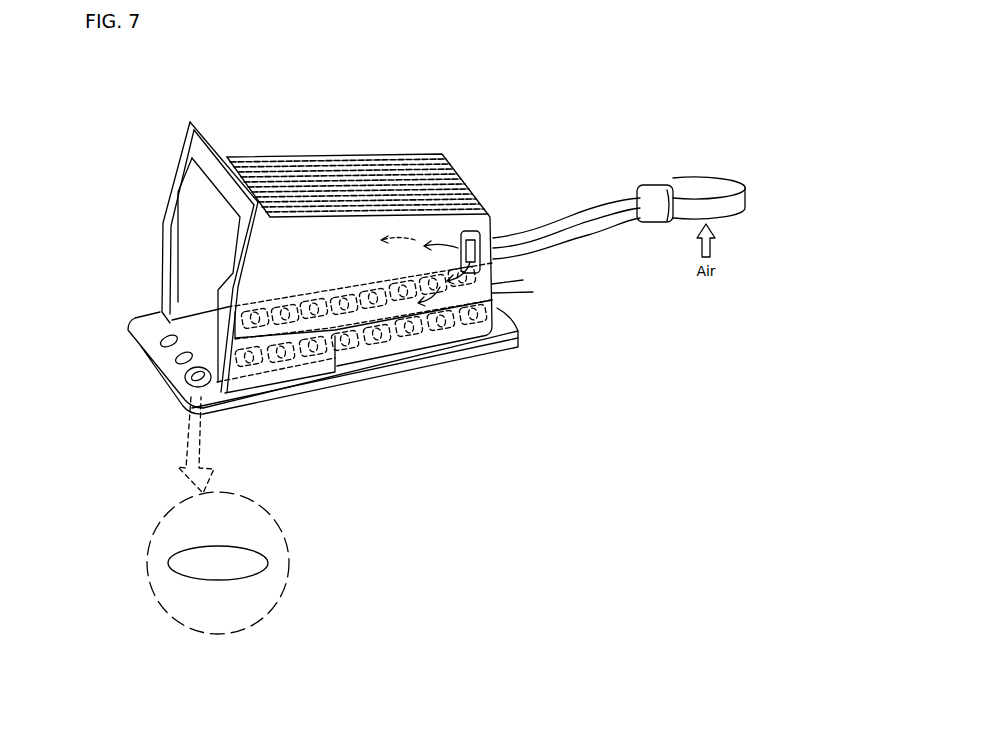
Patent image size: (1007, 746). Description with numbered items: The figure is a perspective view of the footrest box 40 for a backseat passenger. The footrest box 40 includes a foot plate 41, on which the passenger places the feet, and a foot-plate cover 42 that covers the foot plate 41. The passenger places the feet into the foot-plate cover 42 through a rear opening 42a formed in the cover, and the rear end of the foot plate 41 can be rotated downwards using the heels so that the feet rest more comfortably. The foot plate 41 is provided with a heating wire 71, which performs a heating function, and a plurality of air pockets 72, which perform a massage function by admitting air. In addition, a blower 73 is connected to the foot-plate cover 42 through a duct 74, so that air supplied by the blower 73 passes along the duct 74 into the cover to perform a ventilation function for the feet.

The footrest box 40 is at (288, 154).
The foot plate 41 is at (463, 358).
The foot-plate cover 42 is at (353, 154).
The rear opening 42a is at (194, 233).
The heating wire 71 is at (380, 348).
The air pockets 72 is at (180, 357).
The blower 73 is at (686, 176).
The duct 74 is at (566, 228).